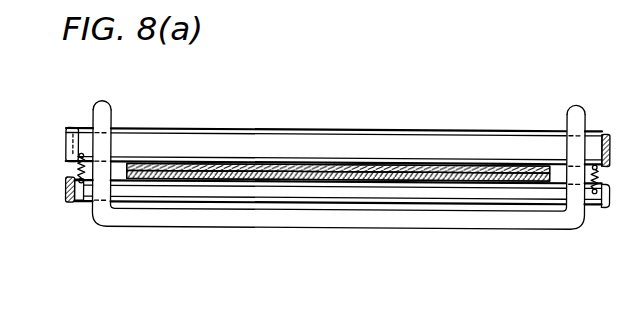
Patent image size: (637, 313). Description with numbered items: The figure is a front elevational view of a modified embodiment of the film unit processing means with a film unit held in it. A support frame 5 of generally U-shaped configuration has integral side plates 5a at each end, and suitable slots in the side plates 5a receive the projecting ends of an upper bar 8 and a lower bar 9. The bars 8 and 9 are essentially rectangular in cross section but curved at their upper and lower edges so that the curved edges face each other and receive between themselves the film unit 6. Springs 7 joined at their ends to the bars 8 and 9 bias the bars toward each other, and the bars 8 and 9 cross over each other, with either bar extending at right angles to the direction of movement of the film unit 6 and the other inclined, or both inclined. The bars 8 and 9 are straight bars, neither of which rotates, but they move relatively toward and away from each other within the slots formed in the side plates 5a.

The support frame 5 is at (316, 188).
The side plates 5a is at (103, 148).
The film unit 6 is at (215, 180).
The springs 7 is at (79, 166).
The upper bar 8 is at (285, 140).
The lower bar 9 is at (356, 193).